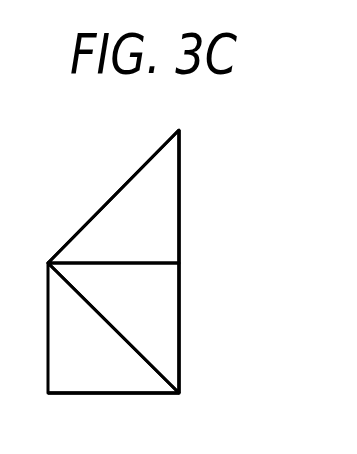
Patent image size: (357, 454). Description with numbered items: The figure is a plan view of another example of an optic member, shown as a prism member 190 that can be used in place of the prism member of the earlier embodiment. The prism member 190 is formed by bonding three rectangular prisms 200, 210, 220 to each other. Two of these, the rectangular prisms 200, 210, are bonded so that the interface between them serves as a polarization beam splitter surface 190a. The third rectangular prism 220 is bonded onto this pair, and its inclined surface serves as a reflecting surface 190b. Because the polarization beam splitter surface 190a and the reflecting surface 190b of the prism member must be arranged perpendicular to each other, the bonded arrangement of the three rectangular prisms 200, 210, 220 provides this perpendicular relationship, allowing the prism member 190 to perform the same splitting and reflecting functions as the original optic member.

The prism member 190 is at (202, 261).
The polarization beam splitter surface 190a is at (118, 337).
The reflecting surface 190b is at (150, 162).
The rectangular prism 200 is at (137, 377).
The rectangular prism 210 is at (150, 292).
The rectangular prism 220 is at (158, 202).